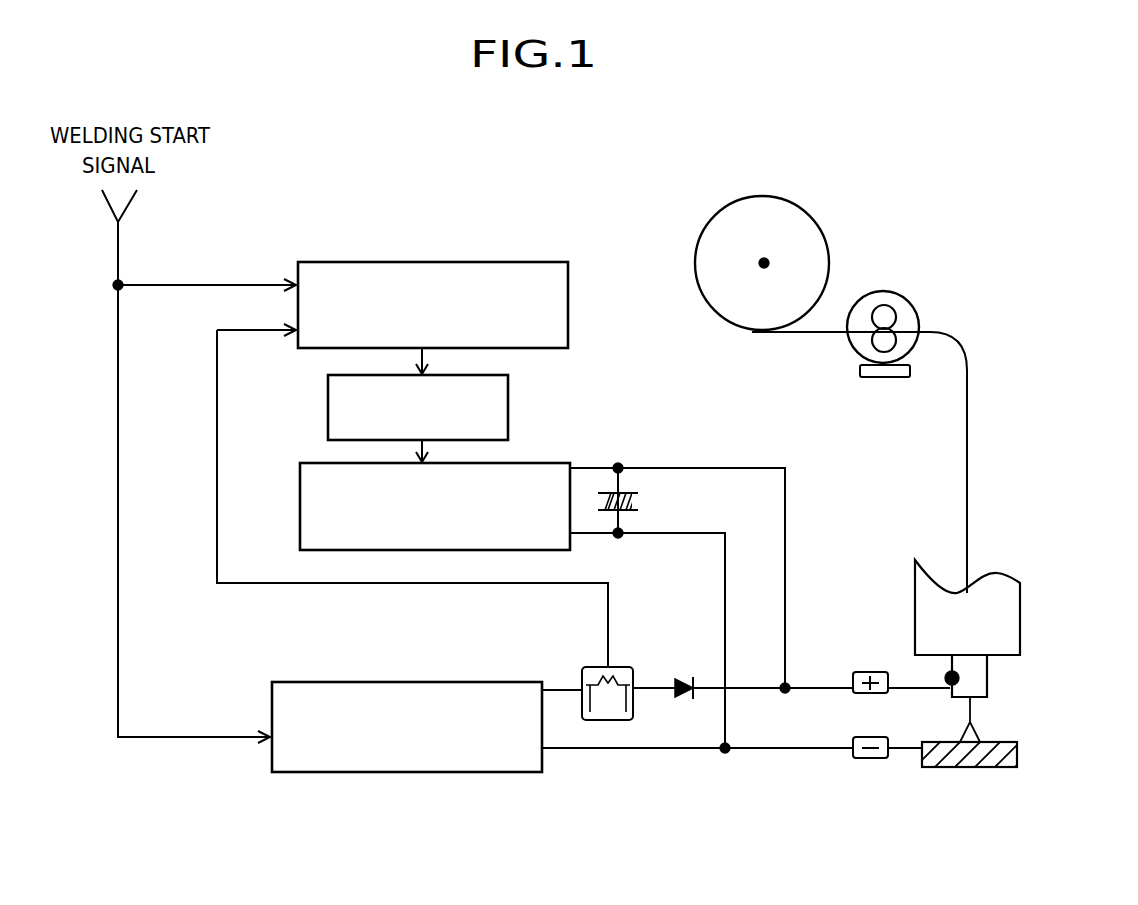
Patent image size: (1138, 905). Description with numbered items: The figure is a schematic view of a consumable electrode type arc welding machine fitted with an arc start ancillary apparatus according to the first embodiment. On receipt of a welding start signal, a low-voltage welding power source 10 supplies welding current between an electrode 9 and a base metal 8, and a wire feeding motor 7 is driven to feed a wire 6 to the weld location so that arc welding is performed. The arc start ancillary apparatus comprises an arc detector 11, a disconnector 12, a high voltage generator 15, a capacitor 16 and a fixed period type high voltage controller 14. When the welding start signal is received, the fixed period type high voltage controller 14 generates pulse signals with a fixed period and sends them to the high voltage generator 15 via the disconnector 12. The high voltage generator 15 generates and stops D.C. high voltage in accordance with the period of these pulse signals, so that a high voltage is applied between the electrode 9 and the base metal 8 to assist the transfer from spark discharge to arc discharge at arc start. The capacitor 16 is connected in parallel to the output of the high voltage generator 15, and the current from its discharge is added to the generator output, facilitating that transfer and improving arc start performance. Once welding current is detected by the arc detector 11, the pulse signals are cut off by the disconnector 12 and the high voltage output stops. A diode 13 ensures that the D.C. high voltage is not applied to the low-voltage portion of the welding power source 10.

The wire 6 is at (817, 220).
The wire feeding motor 7 is at (908, 297).
The base metal 8 is at (1017, 767).
The electrode 9 is at (987, 675).
The low-voltage welding power source 10 is at (397, 772).
The arc detector 11 is at (618, 667).
The disconnector 12 is at (508, 395).
The diode 13 is at (690, 698).
The fixed period type high voltage controller 14 is at (568, 272).
The high voltage generator 15 is at (528, 463).
The capacitor 16 is at (638, 493).